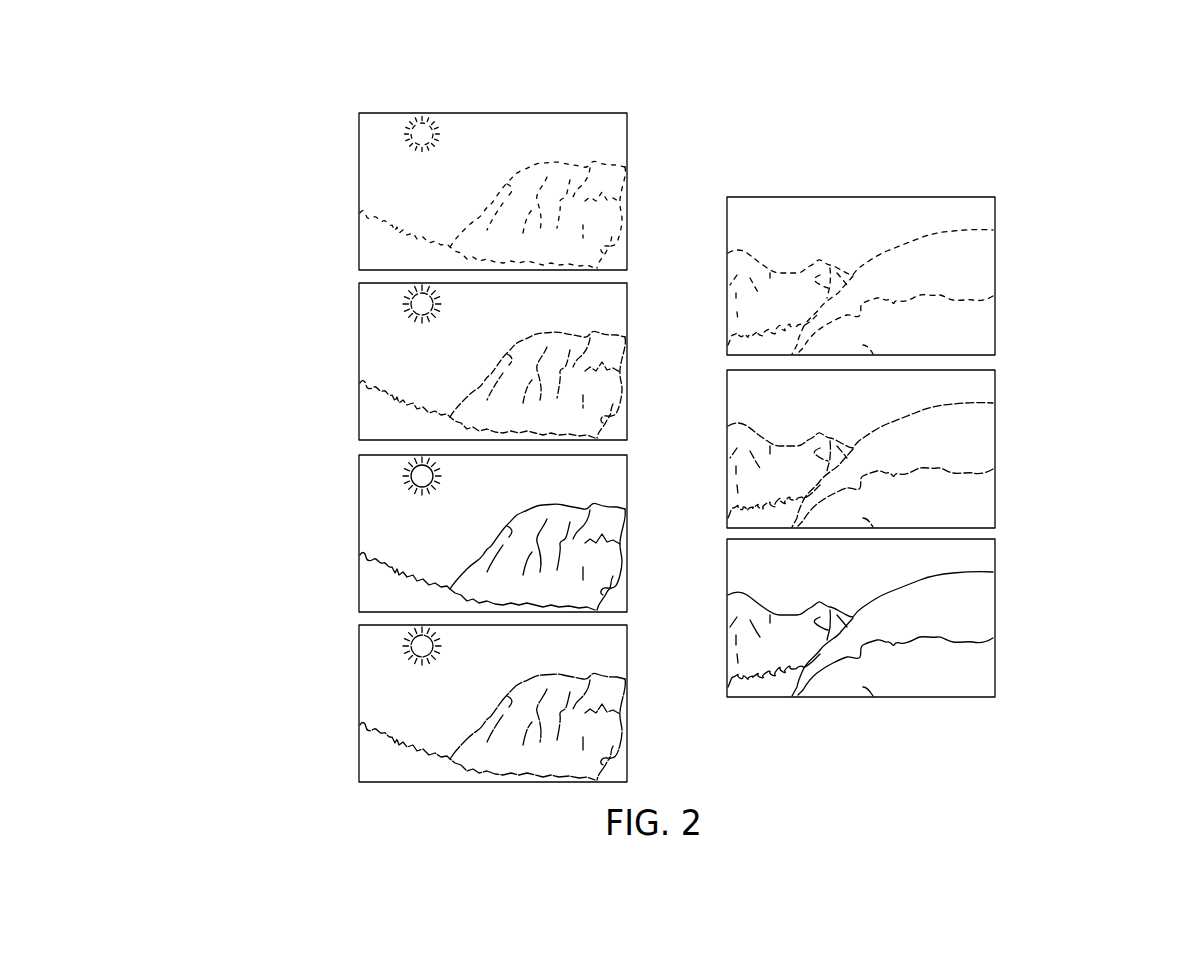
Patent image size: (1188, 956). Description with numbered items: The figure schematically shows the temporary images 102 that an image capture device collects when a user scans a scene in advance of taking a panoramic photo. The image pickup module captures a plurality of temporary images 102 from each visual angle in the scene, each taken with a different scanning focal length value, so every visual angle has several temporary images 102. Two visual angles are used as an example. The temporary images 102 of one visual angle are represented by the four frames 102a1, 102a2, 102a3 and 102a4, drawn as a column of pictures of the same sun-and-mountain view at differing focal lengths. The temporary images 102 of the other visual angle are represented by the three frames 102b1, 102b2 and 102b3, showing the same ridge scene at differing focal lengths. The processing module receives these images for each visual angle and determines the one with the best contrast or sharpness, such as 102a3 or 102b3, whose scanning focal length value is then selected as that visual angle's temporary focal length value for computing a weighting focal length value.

The temporary images 102 is at (501, 96).
The temporary image of first visual angle 102a1 is at (359, 191).
The temporary image of first visual angle 102a2 is at (359, 361).
The temporary image of first visual angle 102a3 is at (359, 533).
The temporary image of first visual angle 102a4 is at (359, 703).
The temporary image of second visual angle 102b1 is at (995, 275).
The temporary image of second visual angle 102b2 is at (995, 448).
The temporary image of second visual angle 102b3 is at (995, 617).